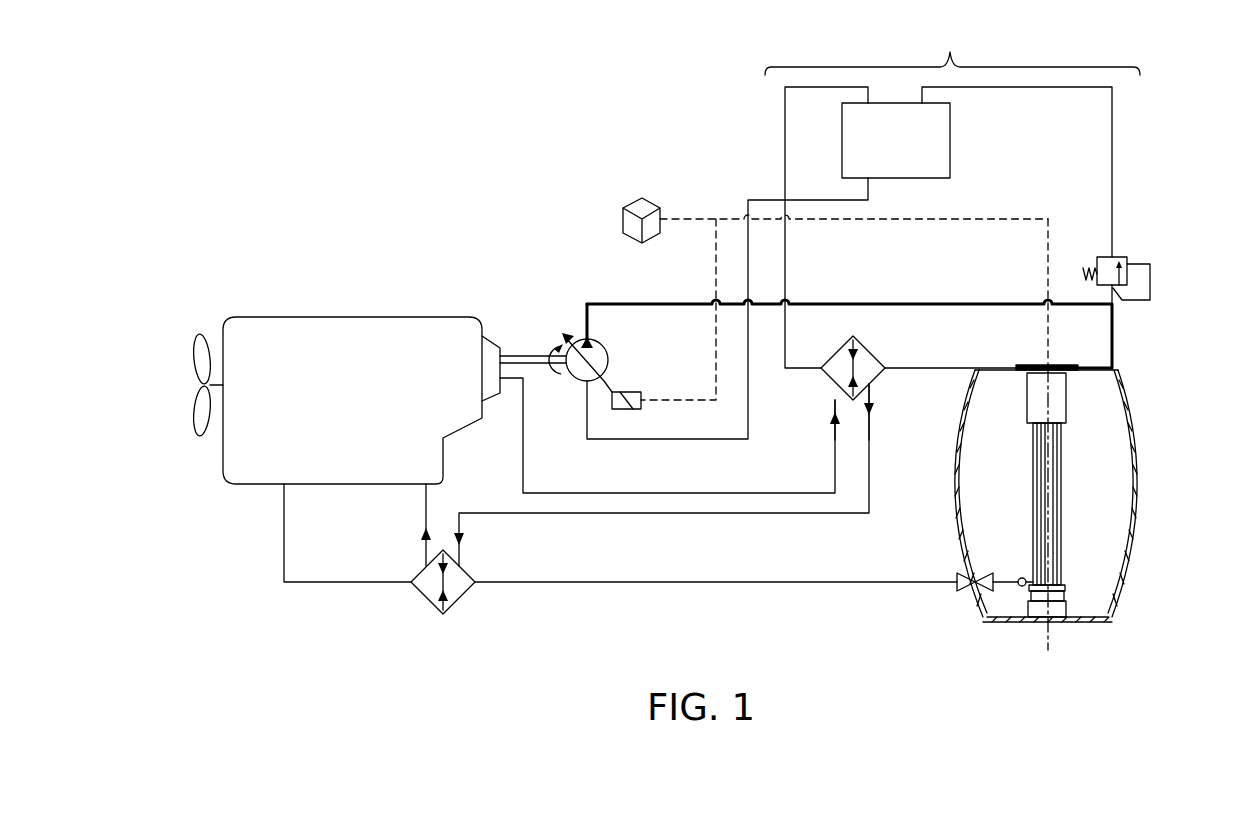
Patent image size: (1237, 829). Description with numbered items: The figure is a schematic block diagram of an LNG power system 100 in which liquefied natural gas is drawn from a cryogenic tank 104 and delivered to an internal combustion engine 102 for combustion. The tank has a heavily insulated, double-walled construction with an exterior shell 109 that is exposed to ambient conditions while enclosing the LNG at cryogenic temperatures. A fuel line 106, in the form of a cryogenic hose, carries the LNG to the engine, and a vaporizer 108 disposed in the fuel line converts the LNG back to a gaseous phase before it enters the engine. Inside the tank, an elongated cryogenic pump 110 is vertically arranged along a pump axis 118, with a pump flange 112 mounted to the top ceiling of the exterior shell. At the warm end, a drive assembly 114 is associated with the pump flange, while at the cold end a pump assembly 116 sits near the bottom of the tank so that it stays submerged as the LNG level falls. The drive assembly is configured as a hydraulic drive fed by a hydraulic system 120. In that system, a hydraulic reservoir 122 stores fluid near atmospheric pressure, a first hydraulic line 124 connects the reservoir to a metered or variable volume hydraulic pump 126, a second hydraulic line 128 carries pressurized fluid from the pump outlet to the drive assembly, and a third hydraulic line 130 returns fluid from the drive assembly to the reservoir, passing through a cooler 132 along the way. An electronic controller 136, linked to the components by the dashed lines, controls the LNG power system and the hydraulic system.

The LNG power system 100 is at (437, 118).
The internal combustion engine 102 is at (327, 317).
The cryogenic tank 104 is at (953, 477).
The fuel line 106 is at (717, 583).
The vaporizer 108 is at (460, 598).
The exterior shell 109 is at (995, 370).
The cryogenic pump 110 is at (1062, 498).
The pump flange 112 is at (1060, 368).
The drive assembly 114 is at (1062, 400).
The pump assembly 116 is at (1066, 604).
The pump axis 118 is at (1050, 638).
The hydraulic system 120 is at (957, 162).
The hydraulic reservoir 122 is at (950, 140).
The first hydraulic line 124 is at (870, 186).
The hydraulic pump 126 is at (577, 342).
The second hydraulic line 128 is at (890, 304).
The third hydraulic line 130 is at (785, 248).
The cooler 132 is at (830, 380).
The electronic controller 136 is at (642, 198).